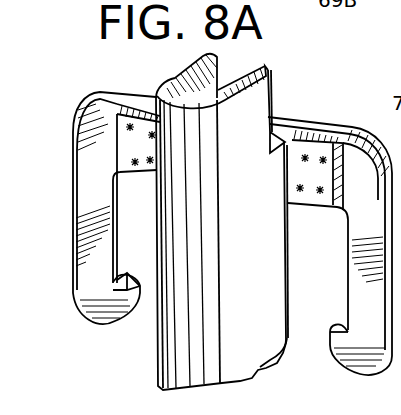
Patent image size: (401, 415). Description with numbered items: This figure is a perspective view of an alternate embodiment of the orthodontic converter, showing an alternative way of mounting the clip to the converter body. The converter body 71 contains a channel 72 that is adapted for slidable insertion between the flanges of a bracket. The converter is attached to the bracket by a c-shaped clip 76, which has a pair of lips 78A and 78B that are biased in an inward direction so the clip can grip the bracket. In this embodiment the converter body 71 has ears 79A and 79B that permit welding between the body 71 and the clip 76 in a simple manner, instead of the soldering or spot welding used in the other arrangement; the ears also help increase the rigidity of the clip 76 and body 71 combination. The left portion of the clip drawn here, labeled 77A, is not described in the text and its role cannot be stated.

The converter body 71 is at (253, 302).
The channel 72 is at (174, 84).
The c-shaped clip 76 is at (363, 297).
The left spring arm 77A is at (115, 192).
The lip 78A is at (113, 294).
The lip 78B is at (340, 330).
The ear 79A is at (125, 118).
The ear 79B is at (337, 102).